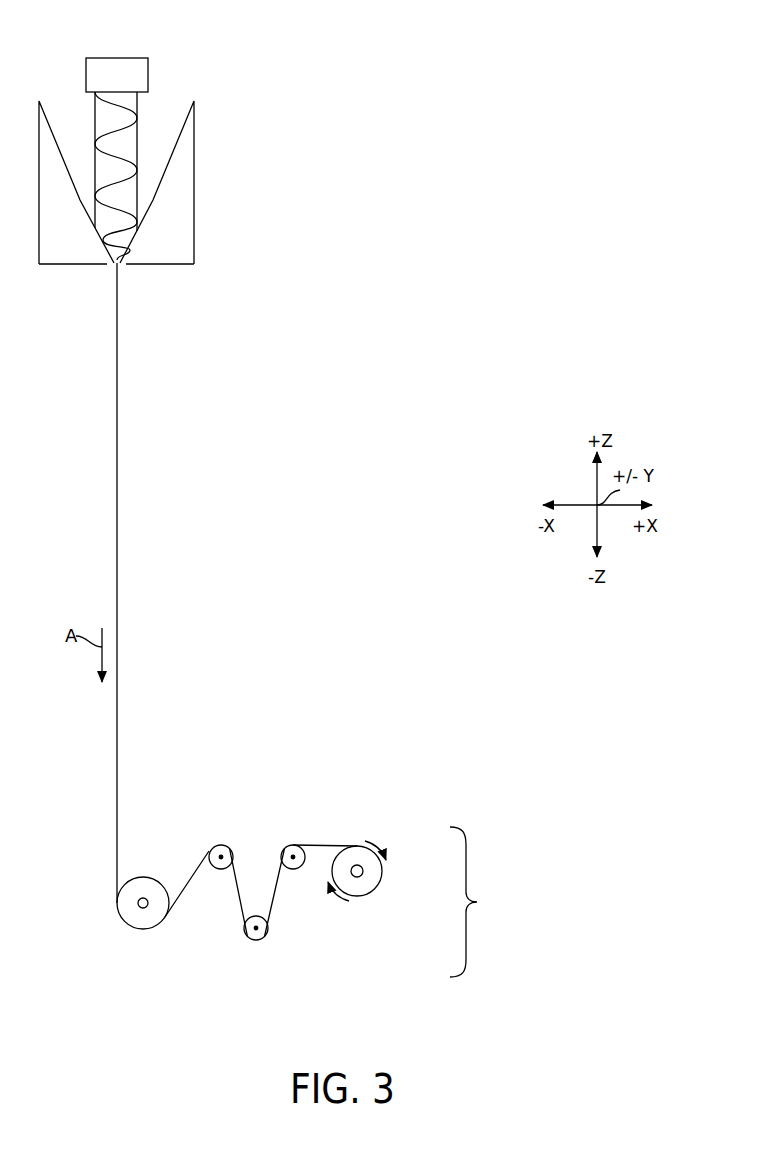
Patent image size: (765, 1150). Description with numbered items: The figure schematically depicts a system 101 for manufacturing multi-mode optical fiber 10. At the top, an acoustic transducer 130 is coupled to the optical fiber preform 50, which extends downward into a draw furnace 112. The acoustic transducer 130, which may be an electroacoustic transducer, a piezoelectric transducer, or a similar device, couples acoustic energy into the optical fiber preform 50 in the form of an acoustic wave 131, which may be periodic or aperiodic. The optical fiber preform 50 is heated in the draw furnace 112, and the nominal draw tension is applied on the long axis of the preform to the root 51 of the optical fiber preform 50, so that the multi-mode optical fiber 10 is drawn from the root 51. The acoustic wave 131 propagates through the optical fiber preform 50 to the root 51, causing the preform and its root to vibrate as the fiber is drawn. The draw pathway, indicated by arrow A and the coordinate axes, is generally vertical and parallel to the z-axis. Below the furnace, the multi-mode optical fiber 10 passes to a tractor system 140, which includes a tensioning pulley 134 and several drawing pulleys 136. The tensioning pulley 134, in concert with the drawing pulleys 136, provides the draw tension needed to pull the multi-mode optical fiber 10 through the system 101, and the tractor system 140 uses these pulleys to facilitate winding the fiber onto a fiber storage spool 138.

The multi-mode optical fiber 10 is at (237, 600).
The optical fiber preform 50 is at (140, 155).
The root 51 is at (137, 313).
The system for manufacturing multi-mode optical fiber 101 is at (464, 152).
The draw furnace 112 is at (162, 170).
The acoustic transducer 130 is at (130, 58).
The acoustic wave 131 is at (95, 140).
The tensioning pulleys 134 is at (140, 929).
The drawing pulleys 136 is at (219, 869).
The fiber storage spool 138 is at (369, 893).
The tractor system 140 is at (485, 902).